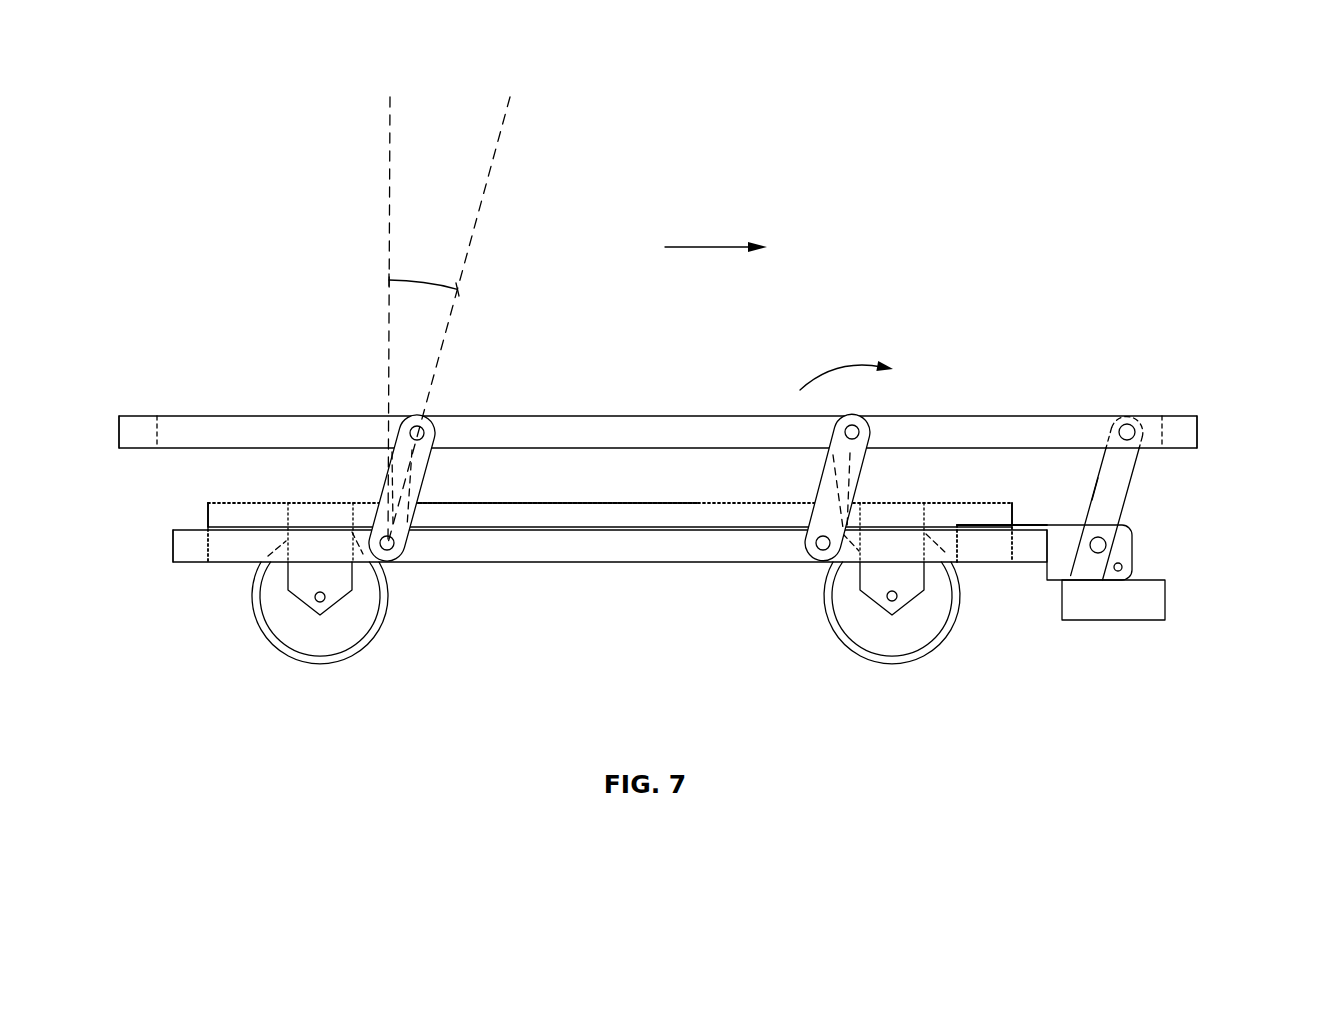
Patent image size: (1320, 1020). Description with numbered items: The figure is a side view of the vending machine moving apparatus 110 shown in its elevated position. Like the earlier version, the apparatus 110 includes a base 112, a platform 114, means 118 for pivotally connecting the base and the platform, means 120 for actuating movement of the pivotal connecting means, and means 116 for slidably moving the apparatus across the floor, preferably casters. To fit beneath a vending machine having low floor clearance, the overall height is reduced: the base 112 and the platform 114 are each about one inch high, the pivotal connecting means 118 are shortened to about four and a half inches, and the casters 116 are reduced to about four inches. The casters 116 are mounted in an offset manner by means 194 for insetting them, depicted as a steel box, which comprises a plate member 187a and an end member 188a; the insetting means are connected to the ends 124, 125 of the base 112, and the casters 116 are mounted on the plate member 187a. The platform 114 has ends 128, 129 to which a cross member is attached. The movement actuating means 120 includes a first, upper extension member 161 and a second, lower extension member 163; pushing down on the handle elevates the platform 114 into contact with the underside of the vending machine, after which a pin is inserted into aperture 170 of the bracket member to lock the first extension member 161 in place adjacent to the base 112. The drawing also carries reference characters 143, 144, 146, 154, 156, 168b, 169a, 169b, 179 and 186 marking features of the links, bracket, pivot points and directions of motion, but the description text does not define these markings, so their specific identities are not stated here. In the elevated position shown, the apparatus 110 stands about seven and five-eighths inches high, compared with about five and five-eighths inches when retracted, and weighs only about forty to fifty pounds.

The apparatus 110 is at (1072, 258).
The base 112 is at (180, 552).
The platform 114 is at (185, 430).
The slidable moving means 116 is at (347, 625).
The pivotal connecting means 118 is at (440, 460).
The movement actuating means 120 is at (1128, 467).
The end 124 is at (1022, 568).
The end 125 is at (192, 555).
The end 128 is at (1198, 422).
The end 129 is at (118, 428).
The link alternate position 143 is at (373, 465).
The pivot pins 144 is at (857, 427).
The tilted reference line 146 is at (463, 306).
The tilt angle 154 is at (427, 275).
The vertical reference line 156 is at (392, 306).
The first extension member 161 is at (1117, 488).
The second extension member 163 is at (1155, 596).
The bracket 168b is at (1057, 568).
The upper pivot pin 169a is at (1125, 427).
The lower pivot pin 169b is at (1103, 543).
The aperture 170 is at (1123, 565).
The direction of travel arrow 179 is at (716, 231).
The rotation direction arrow 186 is at (835, 365).
The plate member 187a is at (505, 503).
The end member 188a is at (208, 523).
The insetting means 194 is at (208, 510).